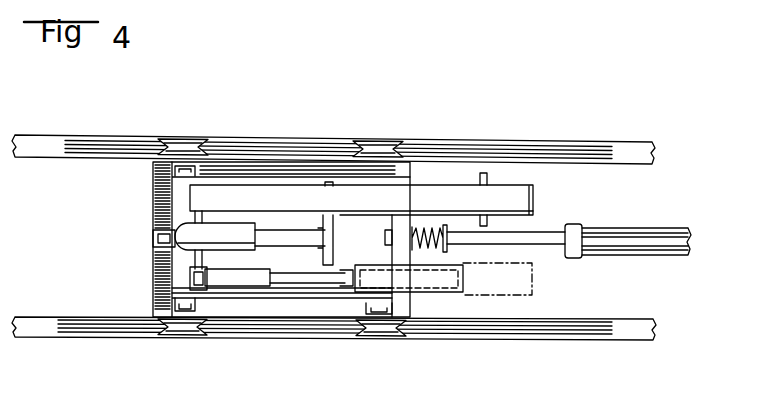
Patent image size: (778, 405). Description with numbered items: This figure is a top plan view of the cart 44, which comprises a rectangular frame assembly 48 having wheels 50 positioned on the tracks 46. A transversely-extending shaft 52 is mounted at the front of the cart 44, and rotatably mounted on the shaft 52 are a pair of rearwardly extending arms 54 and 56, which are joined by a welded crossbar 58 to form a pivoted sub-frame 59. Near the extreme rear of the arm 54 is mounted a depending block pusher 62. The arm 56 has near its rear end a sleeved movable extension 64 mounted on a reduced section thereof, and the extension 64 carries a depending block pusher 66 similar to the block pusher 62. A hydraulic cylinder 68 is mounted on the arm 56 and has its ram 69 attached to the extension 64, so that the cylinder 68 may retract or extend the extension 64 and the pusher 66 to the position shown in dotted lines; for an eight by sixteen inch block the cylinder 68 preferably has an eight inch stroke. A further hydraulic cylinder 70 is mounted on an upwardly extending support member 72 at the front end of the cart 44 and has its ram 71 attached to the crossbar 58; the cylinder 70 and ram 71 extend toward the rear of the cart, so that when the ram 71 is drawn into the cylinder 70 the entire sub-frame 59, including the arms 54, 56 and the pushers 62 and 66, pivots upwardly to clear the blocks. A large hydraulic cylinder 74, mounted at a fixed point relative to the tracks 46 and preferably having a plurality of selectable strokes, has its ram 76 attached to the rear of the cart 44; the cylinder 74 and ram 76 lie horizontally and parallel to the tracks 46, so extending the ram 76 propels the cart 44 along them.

The cart 44 is at (461, 111).
The tracks 46 is at (562, 150).
The rectangular frame assembly 48 is at (164, 193).
The wheels 50 is at (182, 140).
The transversely-extending shaft 52 is at (207, 216).
The arm 54 is at (428, 197).
The arm 56 is at (299, 291).
The crossbar 58 is at (332, 250).
The pivoted sub-frame 59 is at (592, 193).
The block pusher 62 is at (488, 184).
The sleeved movable extension 64 is at (372, 270).
The block pusher 66 is at (482, 300).
The hydraulic cylinder 68 is at (240, 270).
The ram 69 is at (295, 272).
The hydraulic cylinder 70 is at (233, 240).
The ram 71 is at (288, 242).
The upwardly extending support member 72 is at (158, 232).
The hydraulic cylinder 74 is at (650, 248).
The ram 76 is at (540, 245).